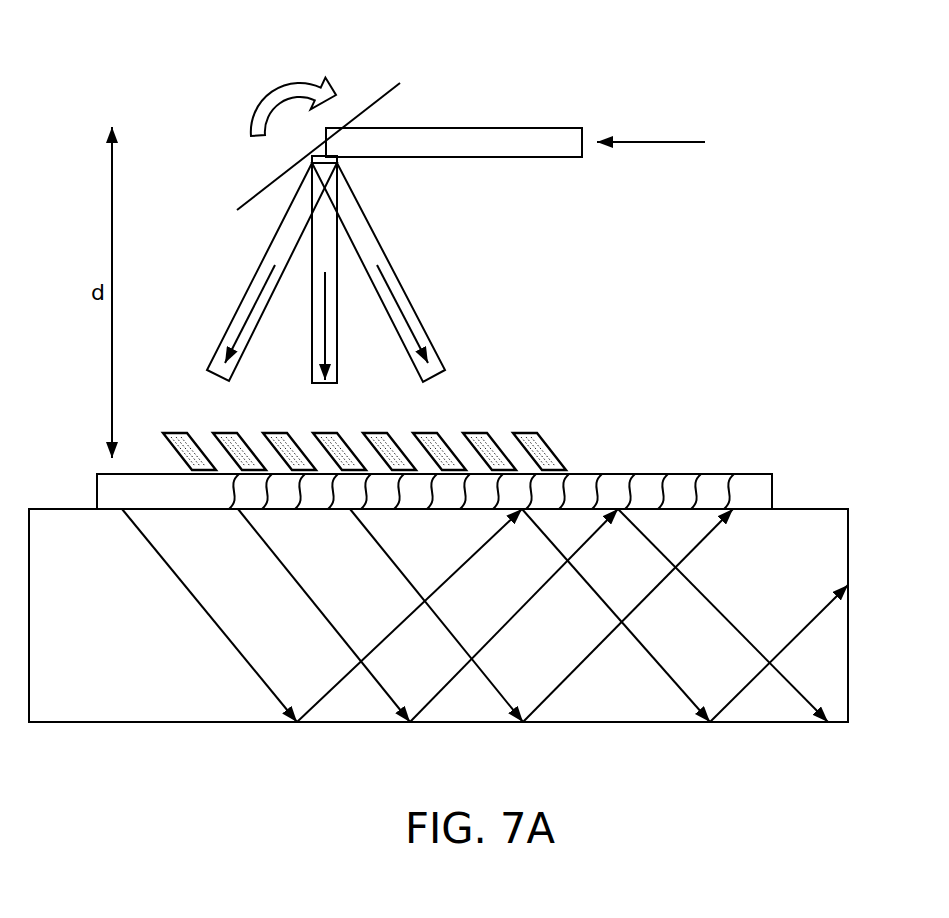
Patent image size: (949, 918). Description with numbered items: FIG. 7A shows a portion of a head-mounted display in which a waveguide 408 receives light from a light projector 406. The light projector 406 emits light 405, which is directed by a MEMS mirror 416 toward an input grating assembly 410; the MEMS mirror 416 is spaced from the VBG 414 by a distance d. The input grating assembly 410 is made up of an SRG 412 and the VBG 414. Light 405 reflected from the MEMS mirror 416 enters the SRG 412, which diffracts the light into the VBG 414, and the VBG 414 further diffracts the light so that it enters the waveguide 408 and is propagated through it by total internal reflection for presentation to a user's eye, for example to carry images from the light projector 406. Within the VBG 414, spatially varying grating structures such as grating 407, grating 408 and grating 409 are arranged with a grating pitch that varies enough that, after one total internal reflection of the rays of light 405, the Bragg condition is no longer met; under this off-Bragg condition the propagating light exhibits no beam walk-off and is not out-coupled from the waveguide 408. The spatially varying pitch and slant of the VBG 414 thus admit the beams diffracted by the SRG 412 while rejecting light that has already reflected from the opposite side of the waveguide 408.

The light 405 is at (647, 97).
The light projector 406 is at (675, 142).
The grating 407 is at (632, 478).
The waveguide 408 is at (695, 475).
The grating 409 is at (757, 480).
The input grating assembly 410 is at (810, 427).
The SRG 412 is at (556, 445).
The VBG 414 is at (93, 495).
The MEMS mirror 416 is at (249, 186).